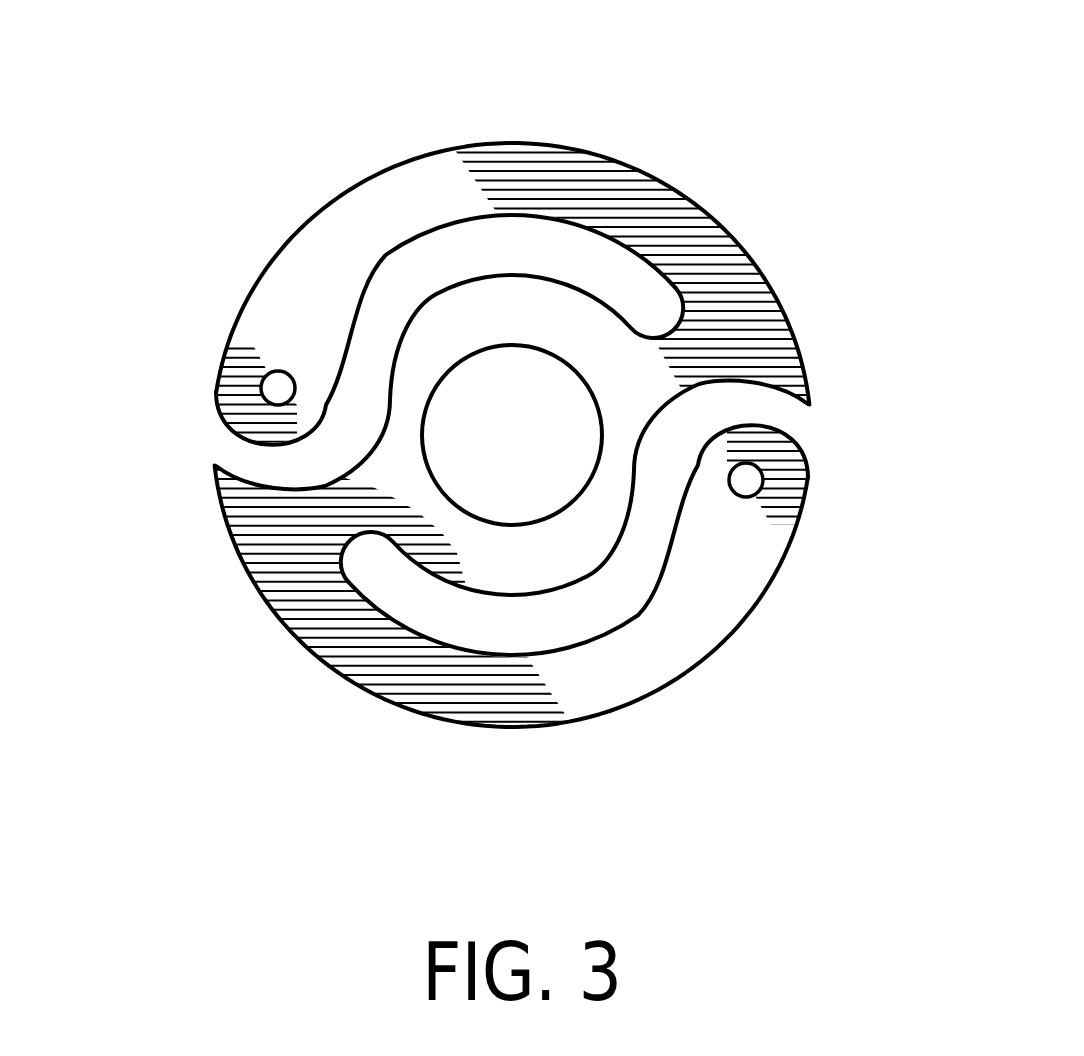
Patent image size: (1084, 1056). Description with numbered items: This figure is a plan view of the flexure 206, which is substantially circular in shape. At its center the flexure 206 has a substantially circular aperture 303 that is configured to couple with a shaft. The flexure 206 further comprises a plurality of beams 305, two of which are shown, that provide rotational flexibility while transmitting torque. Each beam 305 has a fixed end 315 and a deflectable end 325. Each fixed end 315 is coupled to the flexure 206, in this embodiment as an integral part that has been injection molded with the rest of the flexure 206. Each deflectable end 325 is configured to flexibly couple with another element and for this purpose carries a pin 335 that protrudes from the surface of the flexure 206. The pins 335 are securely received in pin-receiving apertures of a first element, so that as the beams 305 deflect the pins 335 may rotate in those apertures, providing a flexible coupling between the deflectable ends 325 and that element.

The flexure 206 is at (800, 192).
The aperture 303 is at (505, 400).
The beams 305 is at (467, 147).
The fixed end 315 is at (247, 563).
The deflectable end 325 is at (228, 362).
The pin 335 is at (261, 389).